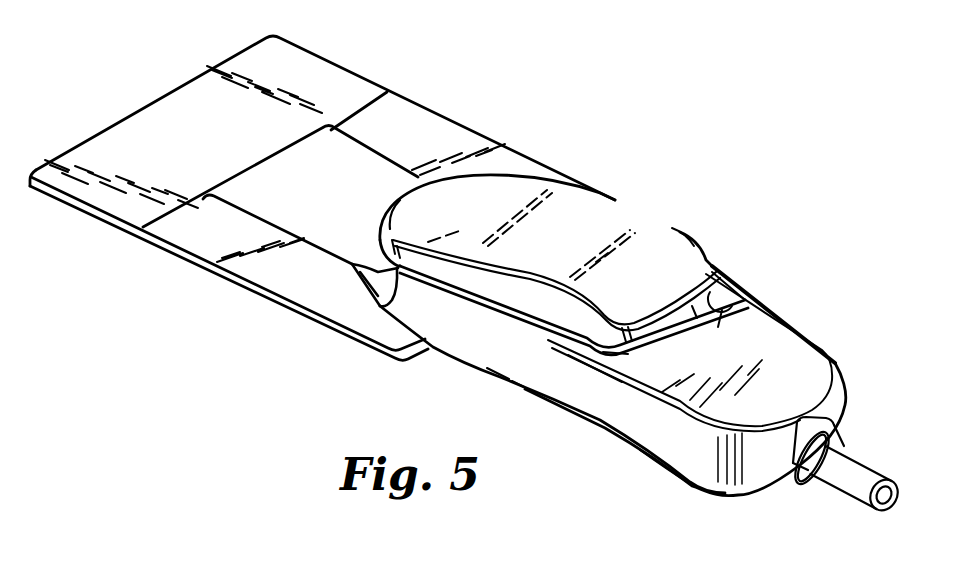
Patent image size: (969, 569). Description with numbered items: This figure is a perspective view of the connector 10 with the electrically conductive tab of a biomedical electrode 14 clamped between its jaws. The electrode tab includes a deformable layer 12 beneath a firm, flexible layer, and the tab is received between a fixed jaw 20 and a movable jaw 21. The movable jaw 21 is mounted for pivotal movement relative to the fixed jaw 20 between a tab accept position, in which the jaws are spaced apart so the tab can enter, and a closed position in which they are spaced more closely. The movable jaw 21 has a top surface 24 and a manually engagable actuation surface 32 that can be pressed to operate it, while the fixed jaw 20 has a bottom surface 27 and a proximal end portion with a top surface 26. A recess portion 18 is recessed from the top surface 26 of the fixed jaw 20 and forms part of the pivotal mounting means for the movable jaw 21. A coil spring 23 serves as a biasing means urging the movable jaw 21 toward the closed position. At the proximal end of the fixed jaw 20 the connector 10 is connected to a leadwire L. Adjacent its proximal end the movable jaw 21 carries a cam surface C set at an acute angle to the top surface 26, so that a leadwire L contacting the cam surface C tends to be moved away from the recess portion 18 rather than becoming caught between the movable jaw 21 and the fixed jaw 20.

The connector 10 is at (604, 444).
The deformable layer 12 is at (420, 125).
The biomedical electrode 14 is at (305, 52).
The recess portion 18 is at (737, 308).
The fixed jaw 20 is at (458, 346).
The movable jaw 21 is at (690, 226).
The coil spring 23 is at (627, 356).
The top surface 24 is at (607, 218).
The top surface 26 is at (769, 310).
The bottom surface 27 is at (660, 463).
The manually engagable actuation surface 32 is at (673, 240).
The cam surface C is at (600, 268).
The leadwire L is at (860, 468).